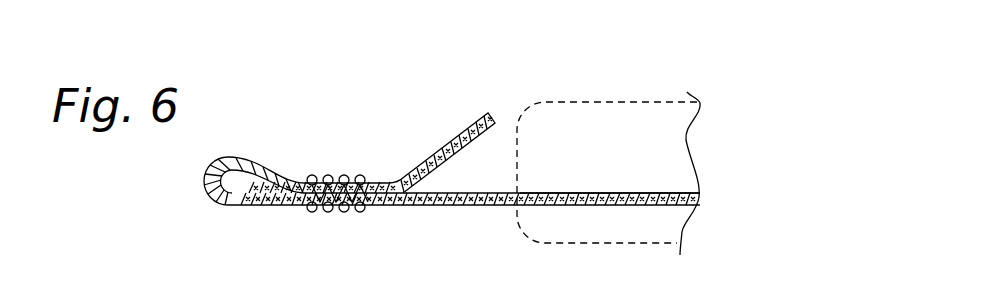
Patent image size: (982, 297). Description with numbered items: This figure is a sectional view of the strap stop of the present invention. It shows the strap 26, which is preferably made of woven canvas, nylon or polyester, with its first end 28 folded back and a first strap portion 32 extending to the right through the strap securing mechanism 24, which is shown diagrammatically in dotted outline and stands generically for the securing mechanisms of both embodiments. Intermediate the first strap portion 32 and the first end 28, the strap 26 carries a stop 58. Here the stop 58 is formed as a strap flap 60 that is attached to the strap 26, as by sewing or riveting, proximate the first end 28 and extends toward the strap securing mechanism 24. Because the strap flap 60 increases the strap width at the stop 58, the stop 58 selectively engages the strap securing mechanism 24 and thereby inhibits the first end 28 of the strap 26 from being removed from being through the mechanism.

The strap securing mechanism 24 is at (609, 80).
The strap 26 is at (479, 207).
The first end 28 is at (204, 183).
The first strap portion 32 is at (533, 193).
The stop 58 is at (352, 126).
The strap flap 60 is at (450, 141).